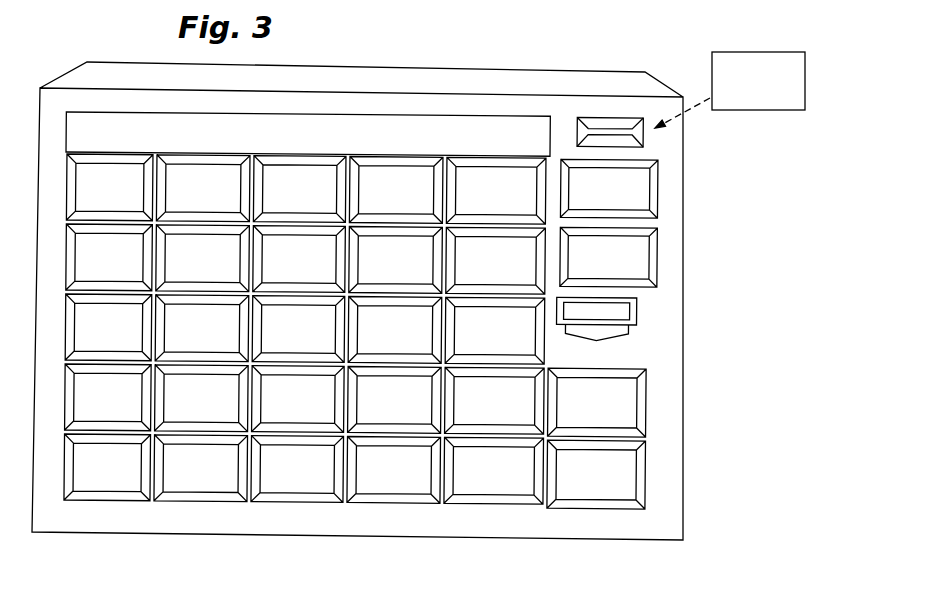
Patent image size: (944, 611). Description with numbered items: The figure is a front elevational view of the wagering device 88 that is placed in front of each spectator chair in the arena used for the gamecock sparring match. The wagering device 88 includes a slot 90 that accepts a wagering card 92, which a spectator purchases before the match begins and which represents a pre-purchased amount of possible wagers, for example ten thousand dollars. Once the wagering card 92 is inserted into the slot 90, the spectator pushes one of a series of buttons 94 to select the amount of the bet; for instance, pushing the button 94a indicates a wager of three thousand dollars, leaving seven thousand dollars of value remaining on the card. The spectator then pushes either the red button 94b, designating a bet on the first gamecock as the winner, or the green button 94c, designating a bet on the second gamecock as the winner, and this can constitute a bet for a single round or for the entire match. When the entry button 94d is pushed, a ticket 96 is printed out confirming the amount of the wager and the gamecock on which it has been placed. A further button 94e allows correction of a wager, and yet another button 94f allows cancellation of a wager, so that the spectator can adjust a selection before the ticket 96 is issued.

The wagering device 88 is at (690, 370).
The slot 90 is at (611, 128).
The wagering card 92 is at (755, 52).
The buttons 94 is at (80, 243).
The button 94a is at (430, 250).
The red button 94b is at (640, 189).
The green button 94c is at (640, 256).
The entry button 94d is at (637, 402).
The button 94e is at (493, 495).
The button 94f is at (637, 467).
The ticket 96 is at (637, 332).